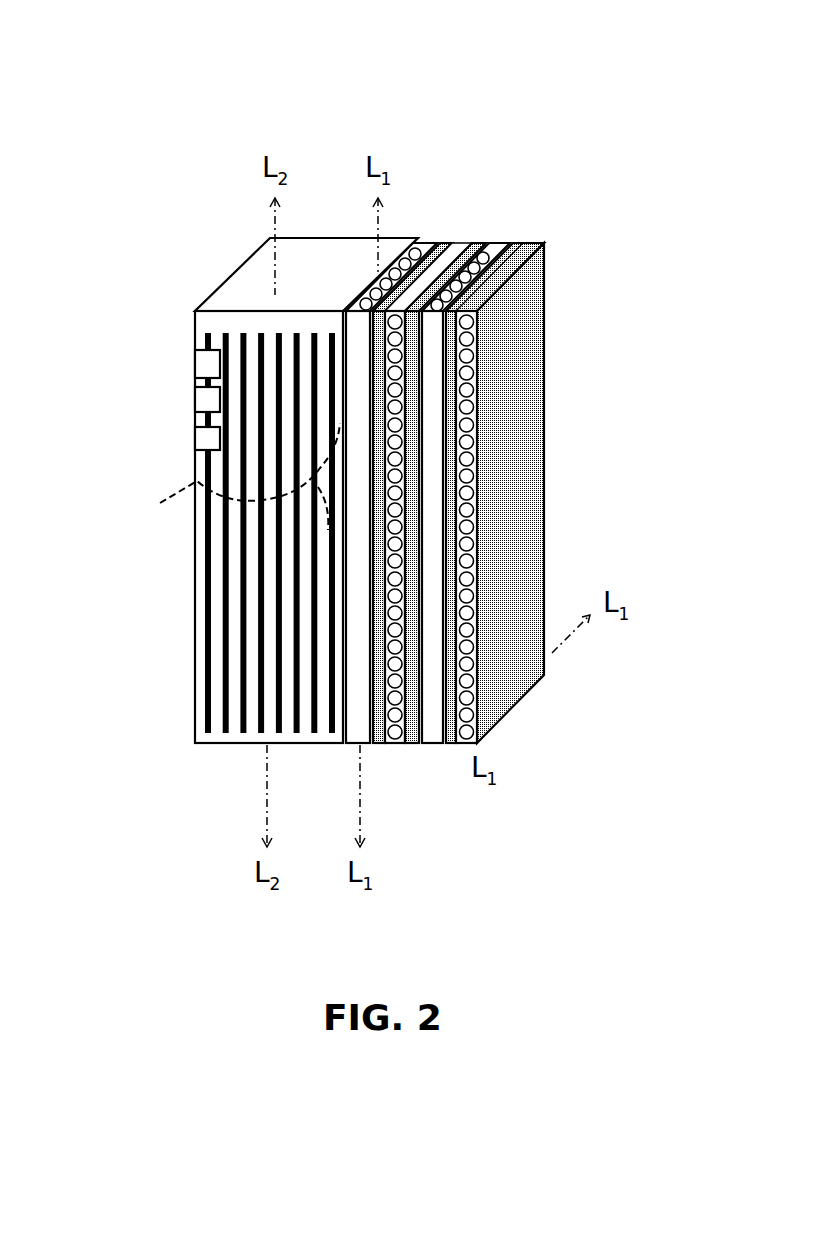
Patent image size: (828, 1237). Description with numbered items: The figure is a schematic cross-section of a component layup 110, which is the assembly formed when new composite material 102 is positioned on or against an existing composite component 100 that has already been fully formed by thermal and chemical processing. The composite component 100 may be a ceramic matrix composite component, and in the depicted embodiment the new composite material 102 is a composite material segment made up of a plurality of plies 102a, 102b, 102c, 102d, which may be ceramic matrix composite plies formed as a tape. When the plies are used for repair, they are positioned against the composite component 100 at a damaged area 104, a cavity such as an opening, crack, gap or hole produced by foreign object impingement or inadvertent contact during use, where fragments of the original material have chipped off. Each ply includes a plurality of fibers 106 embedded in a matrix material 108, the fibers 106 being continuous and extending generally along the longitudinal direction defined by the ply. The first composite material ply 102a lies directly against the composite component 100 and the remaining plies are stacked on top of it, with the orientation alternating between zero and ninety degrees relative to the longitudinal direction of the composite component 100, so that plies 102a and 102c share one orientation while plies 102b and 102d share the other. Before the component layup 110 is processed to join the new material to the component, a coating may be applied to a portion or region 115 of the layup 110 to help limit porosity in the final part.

The component layup 110 is at (208, 133).
The composite component 100 is at (250, 282).
The portion or region of the layup 115 is at (205, 400).
The damaged area 104 is at (218, 480).
The new composite material 102 is at (530, 145).
The first composite material ply 102a is at (362, 732).
The composite material ply 102b is at (455, 253).
The composite material ply 102c is at (455, 748).
The composite material ply 102d is at (517, 262).
The fibers 106 is at (467, 573).
The matrix material 108 is at (475, 432).